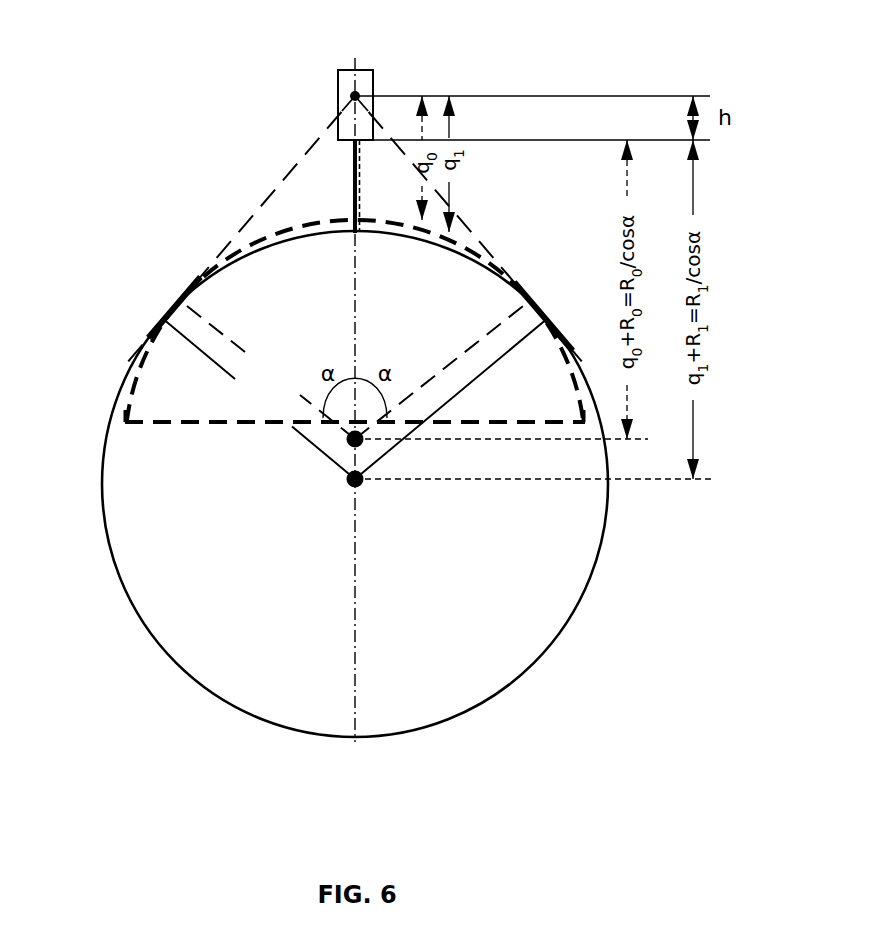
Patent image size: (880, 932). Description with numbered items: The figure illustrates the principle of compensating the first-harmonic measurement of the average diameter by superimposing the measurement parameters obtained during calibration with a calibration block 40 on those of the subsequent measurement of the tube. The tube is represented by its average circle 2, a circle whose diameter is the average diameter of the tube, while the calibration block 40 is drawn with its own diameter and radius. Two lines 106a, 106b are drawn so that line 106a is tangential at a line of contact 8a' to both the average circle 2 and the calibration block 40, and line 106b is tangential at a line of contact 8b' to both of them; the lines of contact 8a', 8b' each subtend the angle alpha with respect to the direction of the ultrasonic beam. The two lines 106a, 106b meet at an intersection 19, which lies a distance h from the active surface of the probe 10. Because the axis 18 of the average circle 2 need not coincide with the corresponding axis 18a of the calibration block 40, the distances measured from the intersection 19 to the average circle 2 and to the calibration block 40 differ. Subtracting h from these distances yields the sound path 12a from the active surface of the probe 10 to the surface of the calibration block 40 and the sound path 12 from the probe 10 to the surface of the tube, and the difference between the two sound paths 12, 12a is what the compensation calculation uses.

The average circle 2 is at (593, 578).
The probe 10 is at (348, 76).
The intersection 19 is at (350, 97).
The sound path 12 is at (353, 182).
The sound path 12a is at (361, 182).
The line 106a is at (238, 229).
The line 106b is at (477, 238).
The line of contact 8a' is at (131, 306).
The line of contact 8b' is at (543, 296).
The calibration block 40 is at (222, 424).
The axis 18a is at (347, 445).
The axis 18 is at (350, 486).